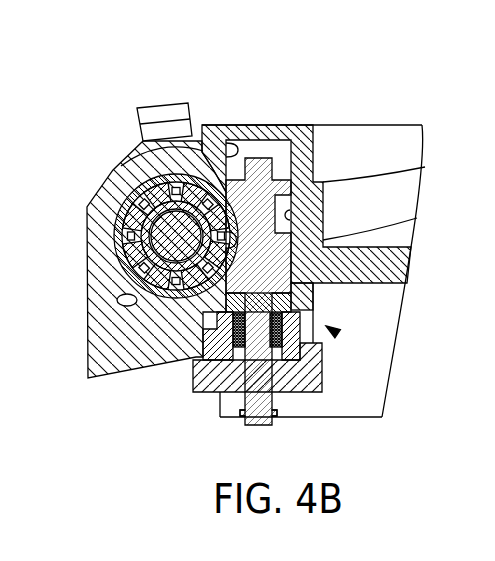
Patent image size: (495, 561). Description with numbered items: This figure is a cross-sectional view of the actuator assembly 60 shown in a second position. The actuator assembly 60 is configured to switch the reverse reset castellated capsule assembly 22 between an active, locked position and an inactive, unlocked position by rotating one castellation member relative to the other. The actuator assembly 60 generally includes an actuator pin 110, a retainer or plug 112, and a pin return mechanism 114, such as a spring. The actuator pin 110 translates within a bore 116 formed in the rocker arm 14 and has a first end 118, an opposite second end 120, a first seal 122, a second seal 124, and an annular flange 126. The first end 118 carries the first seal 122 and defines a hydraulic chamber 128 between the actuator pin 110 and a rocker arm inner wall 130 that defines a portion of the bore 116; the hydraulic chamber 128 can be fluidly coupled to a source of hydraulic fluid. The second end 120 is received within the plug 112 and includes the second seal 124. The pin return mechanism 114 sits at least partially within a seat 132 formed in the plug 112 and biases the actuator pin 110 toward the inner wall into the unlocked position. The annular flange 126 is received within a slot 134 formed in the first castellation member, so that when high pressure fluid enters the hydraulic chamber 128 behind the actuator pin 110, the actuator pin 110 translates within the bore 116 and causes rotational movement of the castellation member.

The rocker arm 14 is at (358, 143).
The reverse reset castellated capsule assembly 22 is at (122, 173).
The actuator assembly 60 is at (338, 334).
The actuator pin 110 is at (313, 290).
The plug 112 is at (212, 380).
The pin return mechanism 114 is at (320, 350).
The bore 116 is at (291, 217).
The first end 118 is at (263, 152).
The second end 120 is at (274, 400).
The first seal 122 is at (425, 167).
The second seal 124 is at (313, 307).
The annular flange 126 is at (417, 218).
The hydraulic chamber 128 is at (288, 135).
The rocker arm inner wall 130 is at (230, 135).
The seat 132 is at (320, 362).
The slot 134 is at (224, 288).